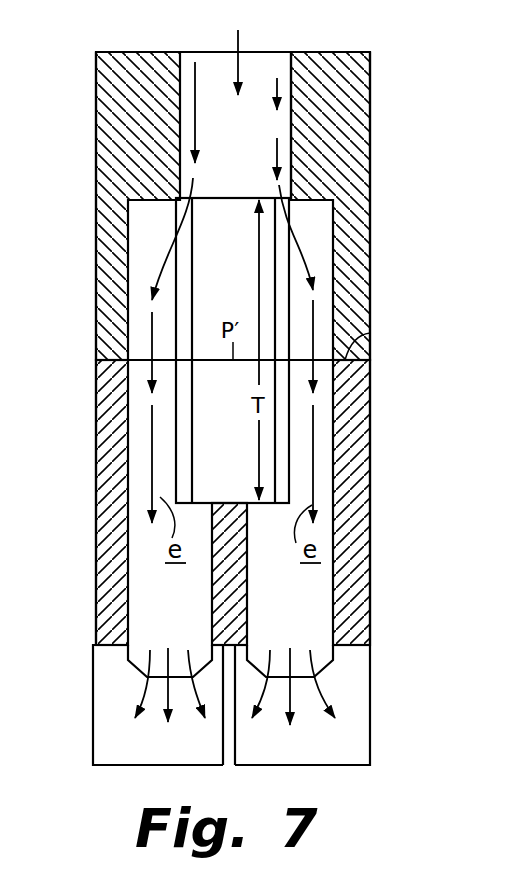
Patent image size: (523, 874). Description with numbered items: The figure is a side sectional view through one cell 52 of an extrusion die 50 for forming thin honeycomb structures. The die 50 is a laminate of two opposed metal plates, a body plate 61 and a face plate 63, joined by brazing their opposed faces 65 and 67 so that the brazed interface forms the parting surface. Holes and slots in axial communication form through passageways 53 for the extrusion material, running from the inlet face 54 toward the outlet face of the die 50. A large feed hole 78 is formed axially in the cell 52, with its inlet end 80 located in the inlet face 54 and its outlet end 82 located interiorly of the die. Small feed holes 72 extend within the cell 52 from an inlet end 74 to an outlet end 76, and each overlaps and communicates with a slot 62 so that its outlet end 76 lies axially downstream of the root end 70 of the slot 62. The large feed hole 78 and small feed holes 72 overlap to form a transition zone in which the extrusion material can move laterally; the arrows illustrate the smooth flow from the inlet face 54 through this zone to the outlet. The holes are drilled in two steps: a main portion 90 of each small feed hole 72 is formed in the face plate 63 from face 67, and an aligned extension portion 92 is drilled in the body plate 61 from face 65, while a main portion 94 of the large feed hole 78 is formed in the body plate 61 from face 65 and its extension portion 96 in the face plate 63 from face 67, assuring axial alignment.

The extrusion die 50 is at (396, 90).
The cell 52 is at (357, 52).
The through passageways 53 is at (238, 47).
The inlet face 54 is at (125, 52).
The body plate 61 is at (96, 233).
The slots 62 is at (370, 725).
The face plate 63 is at (96, 488).
The face 65 is at (118, 362).
The face 67 is at (370, 333).
The root end 70 is at (348, 648).
The small feed holes 72 is at (331, 456).
The inlet end 74 is at (312, 221).
The outlet end 76 is at (302, 677).
The large feed hole 78 is at (289, 128).
The inlet end 80 is at (291, 70).
The outlet end 82 is at (255, 508).
The main portion 90 is at (140, 430).
The extension portion 92 is at (140, 302).
The main portion 94 is at (183, 108).
The extension portion 96 is at (185, 447).